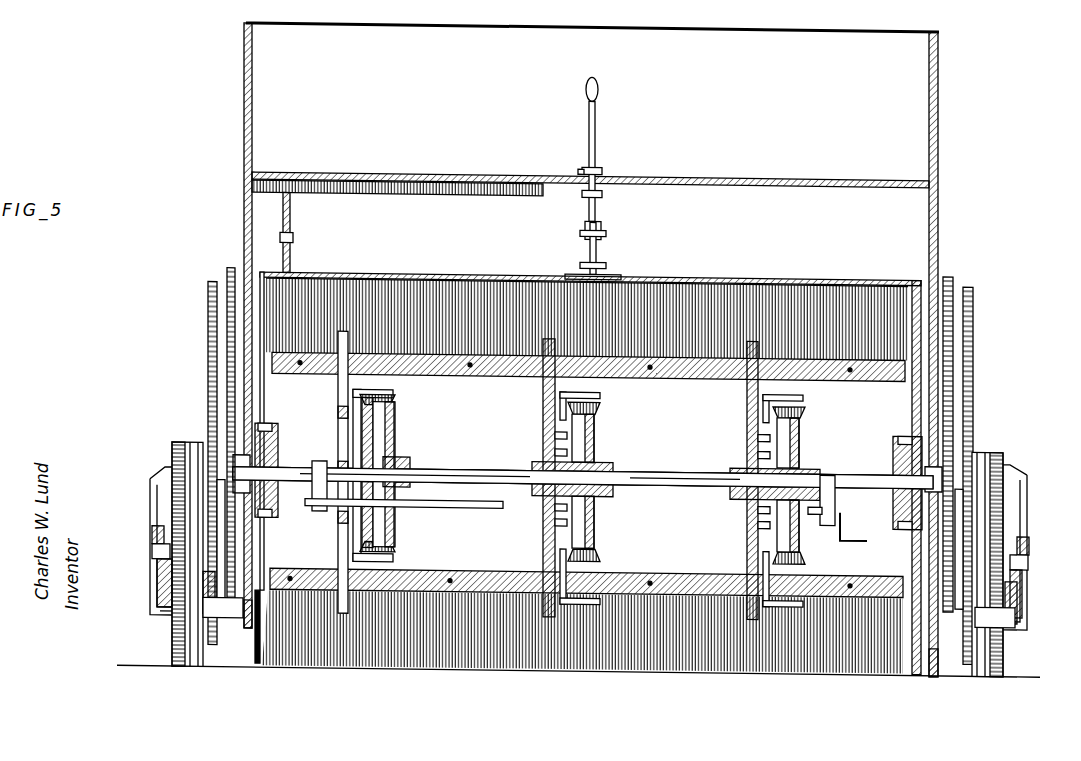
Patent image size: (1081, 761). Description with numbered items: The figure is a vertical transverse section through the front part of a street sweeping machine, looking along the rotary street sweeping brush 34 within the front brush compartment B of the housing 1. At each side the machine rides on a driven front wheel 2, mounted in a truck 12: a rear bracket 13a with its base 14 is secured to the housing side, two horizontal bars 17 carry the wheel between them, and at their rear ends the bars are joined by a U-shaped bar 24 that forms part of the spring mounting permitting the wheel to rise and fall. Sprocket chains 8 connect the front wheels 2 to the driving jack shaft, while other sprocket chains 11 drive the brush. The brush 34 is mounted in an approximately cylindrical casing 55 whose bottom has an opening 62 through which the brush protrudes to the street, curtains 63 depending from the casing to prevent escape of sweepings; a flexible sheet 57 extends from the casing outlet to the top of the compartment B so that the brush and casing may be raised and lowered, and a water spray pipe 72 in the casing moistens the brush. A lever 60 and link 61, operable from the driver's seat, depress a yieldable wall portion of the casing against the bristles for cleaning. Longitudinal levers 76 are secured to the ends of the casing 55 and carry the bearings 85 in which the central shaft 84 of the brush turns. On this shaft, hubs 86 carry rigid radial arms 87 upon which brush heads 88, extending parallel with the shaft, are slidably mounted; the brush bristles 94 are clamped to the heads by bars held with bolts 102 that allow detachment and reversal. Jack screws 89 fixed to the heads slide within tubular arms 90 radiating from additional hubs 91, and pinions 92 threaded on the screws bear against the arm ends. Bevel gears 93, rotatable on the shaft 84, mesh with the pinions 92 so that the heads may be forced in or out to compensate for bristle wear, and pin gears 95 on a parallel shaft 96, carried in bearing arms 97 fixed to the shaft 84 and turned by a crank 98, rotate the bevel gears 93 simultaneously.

The housing 1 is at (243, 233).
The front wheels 2 is at (180, 454).
The sprocket chains 8 is at (207, 313).
The sprocket chains 11 is at (226, 273).
The trucks 12 is at (146, 592).
The rear bracket 13a is at (142, 507).
The base 14 is at (291, 221).
The horizontal bars 17 is at (150, 537).
The U-shaped bar 24 is at (218, 614).
The rotary street sweeping brush 34 is at (490, 279).
The casing 55 is at (248, 385).
The flexible sheet 57 is at (384, 191).
The lever 60 is at (597, 133).
The link 61 is at (598, 247).
The opening 62 is at (258, 668).
The curtains 63 is at (244, 672).
The water spray pipe 72 is at (291, 261).
The longitudinal levers 76 is at (215, 423).
The central shaft 84 is at (482, 475).
The bearings 85 is at (272, 440).
The hubs 86 is at (352, 445).
The radial arms 87 is at (543, 549).
The brush heads 88 is at (674, 369).
The jack screws 89 is at (822, 415).
The tubular arms 90 is at (380, 443).
The hubs 91 is at (615, 458).
The pinions 92 is at (600, 399).
The bevel gears 93 is at (376, 426).
The brush bristles 94 is at (400, 280).
The pin gears 95 is at (400, 499).
The shaft 96 is at (483, 505).
The bearing arms 97 is at (315, 511).
The crank 98 is at (858, 528).
The bolts 102 is at (440, 376).
The brush compartment B is at (782, 270).